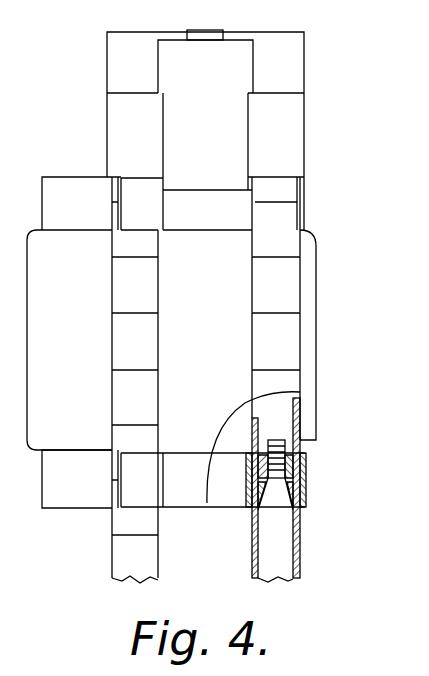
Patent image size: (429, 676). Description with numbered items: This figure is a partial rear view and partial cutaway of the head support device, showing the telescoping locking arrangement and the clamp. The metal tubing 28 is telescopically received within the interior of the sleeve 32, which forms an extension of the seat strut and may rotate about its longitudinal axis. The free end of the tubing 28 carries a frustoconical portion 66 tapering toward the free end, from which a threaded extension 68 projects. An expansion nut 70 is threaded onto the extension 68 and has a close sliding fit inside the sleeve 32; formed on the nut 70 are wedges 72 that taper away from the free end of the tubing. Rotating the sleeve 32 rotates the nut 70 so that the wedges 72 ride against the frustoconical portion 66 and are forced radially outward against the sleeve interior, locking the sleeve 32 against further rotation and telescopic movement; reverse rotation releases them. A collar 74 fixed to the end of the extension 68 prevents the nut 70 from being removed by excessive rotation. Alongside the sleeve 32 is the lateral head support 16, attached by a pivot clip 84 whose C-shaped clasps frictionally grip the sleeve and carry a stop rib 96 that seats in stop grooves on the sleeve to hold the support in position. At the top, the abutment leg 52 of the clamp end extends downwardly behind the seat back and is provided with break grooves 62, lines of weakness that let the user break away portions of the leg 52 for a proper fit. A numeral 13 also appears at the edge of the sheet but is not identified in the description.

The housing 13 is at (420, 57).
The lateral head support 16 is at (86, 348).
The metal tubing 28 is at (275, 565).
The sleeve 32 is at (300, 295).
The abutment leg 52 is at (222, 99).
The break grooves 62 is at (163, 133).
The frustoconical portion 66 is at (275, 500).
The threaded extension 68 is at (285, 447).
The expansion nut 70 is at (300, 468).
The wedges 72 is at (247, 492).
The collar 74 is at (292, 403).
The pivot clip 84 is at (225, 222).
The stop rib 96 is at (257, 445).